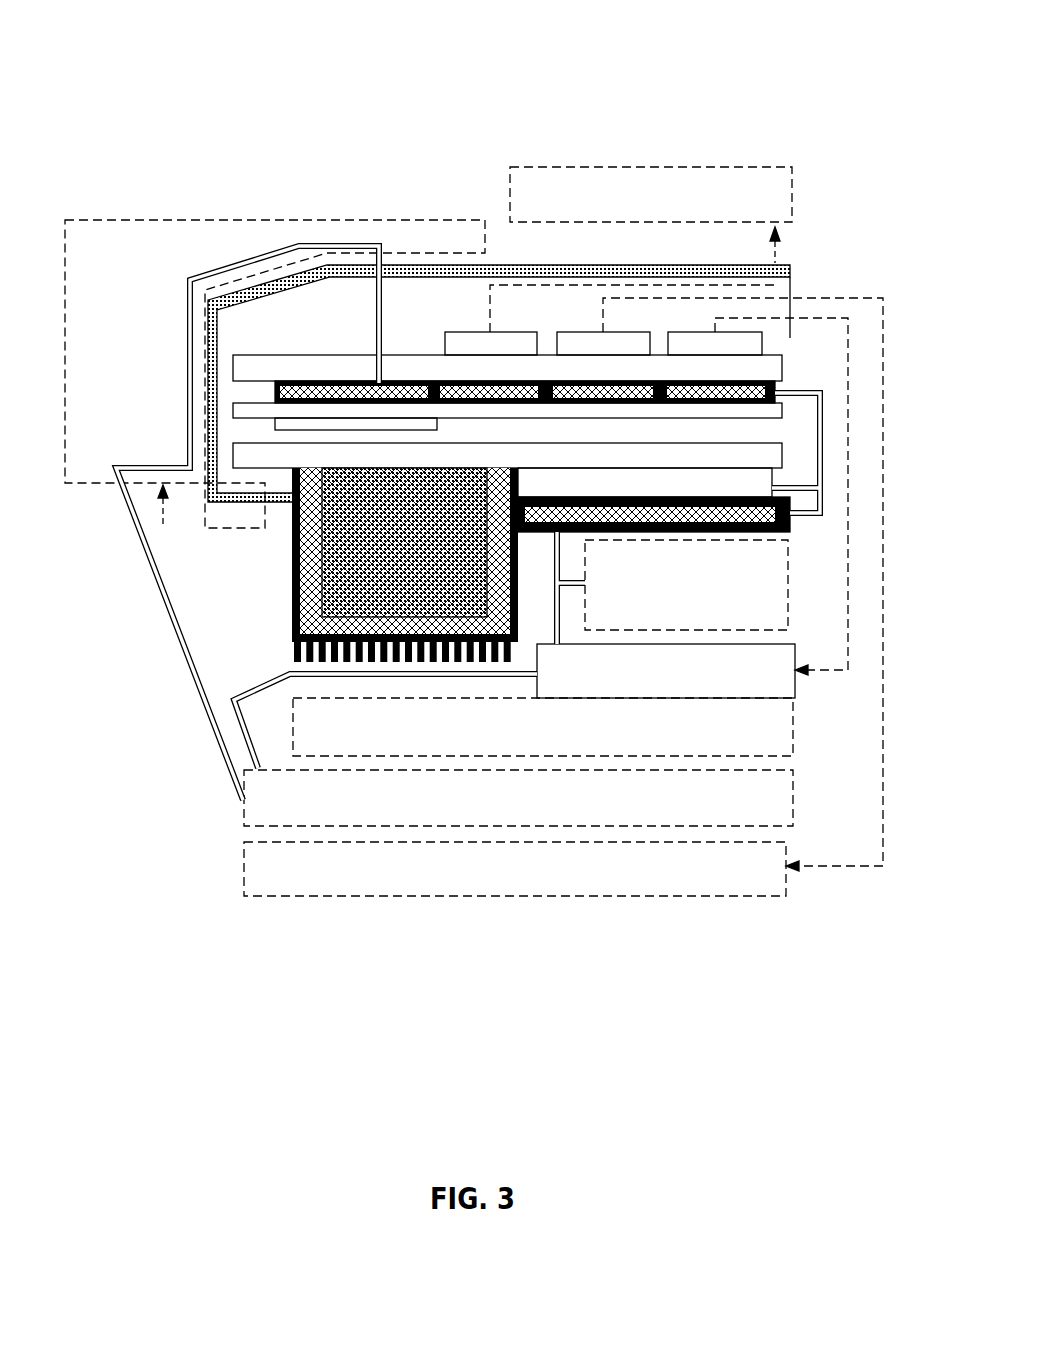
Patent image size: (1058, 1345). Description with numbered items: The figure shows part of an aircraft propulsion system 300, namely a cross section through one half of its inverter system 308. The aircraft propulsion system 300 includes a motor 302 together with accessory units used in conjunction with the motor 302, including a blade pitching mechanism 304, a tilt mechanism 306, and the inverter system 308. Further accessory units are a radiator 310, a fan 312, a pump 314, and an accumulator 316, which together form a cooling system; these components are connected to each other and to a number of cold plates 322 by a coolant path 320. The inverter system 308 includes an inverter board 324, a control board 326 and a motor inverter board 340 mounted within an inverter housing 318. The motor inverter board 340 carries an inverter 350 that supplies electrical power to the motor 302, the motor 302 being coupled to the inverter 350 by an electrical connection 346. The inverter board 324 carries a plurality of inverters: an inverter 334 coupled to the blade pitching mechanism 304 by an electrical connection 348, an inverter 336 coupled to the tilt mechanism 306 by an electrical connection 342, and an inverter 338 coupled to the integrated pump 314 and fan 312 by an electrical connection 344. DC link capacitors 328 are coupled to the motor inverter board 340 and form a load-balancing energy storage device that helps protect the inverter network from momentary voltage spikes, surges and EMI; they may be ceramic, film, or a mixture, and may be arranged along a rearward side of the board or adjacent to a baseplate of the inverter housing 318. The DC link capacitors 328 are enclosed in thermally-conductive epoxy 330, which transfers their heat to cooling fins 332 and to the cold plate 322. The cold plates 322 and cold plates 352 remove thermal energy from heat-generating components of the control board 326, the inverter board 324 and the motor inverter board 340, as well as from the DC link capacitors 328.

The aircraft propulsion system 300 is at (573, 67).
The motor 302 is at (143, 371).
The blade pitching mechanism 304 is at (760, 207).
The tilt mechanism 306 is at (611, 882).
The inverter system 308 is at (832, 218).
The radiator 310 is at (575, 810).
The fan 312 is at (556, 742).
The pump 314 is at (703, 688).
The accumulator 316 is at (707, 611).
The inverter housing 318 is at (530, 264).
The coolant path 320 is at (826, 450).
The cold plate 322 is at (772, 533).
The inverter board 324 is at (784, 365).
The control board 326 is at (783, 410).
The DC link capacitors 328 is at (336, 556).
The thermally-conductive epoxy 330 is at (312, 590).
The cooling fins 332 is at (302, 650).
The inverter 334 is at (480, 331).
The inverter 336 is at (592, 331).
The inverter 338 is at (693, 330).
The motor inverter board 340 is at (234, 468).
The electrical connection 342 is at (838, 870).
The electrical connection 344 is at (826, 672).
The electrical connection 346 is at (163, 510).
The electrical connection 348 is at (788, 283).
The inverter 350 is at (774, 487).
The cold plates 352 is at (345, 382).